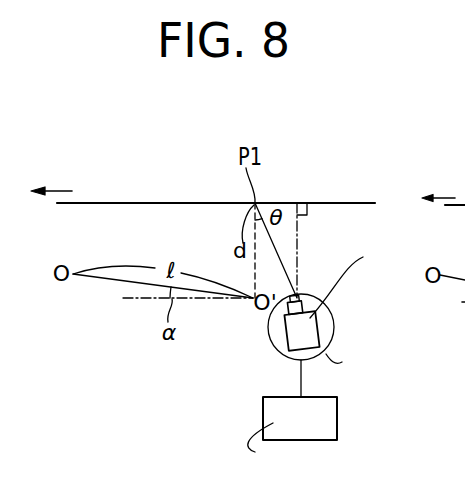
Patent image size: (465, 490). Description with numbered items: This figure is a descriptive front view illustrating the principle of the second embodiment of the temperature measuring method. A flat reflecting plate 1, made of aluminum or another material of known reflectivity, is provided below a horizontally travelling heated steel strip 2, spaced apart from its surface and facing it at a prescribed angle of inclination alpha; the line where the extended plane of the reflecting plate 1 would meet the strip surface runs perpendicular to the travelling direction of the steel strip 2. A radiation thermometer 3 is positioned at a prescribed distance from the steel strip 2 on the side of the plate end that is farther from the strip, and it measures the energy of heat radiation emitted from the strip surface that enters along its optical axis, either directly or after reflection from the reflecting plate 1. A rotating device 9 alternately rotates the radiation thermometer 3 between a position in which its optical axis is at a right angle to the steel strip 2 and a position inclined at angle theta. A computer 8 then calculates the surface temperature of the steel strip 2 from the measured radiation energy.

The flat reflecting plate 1 is at (110, 280).
The heated steel strip 2 is at (174, 203).
The radiation thermometer 3 is at (313, 322).
The computer 8 is at (338, 415).
The rotating device 9 is at (334, 328).